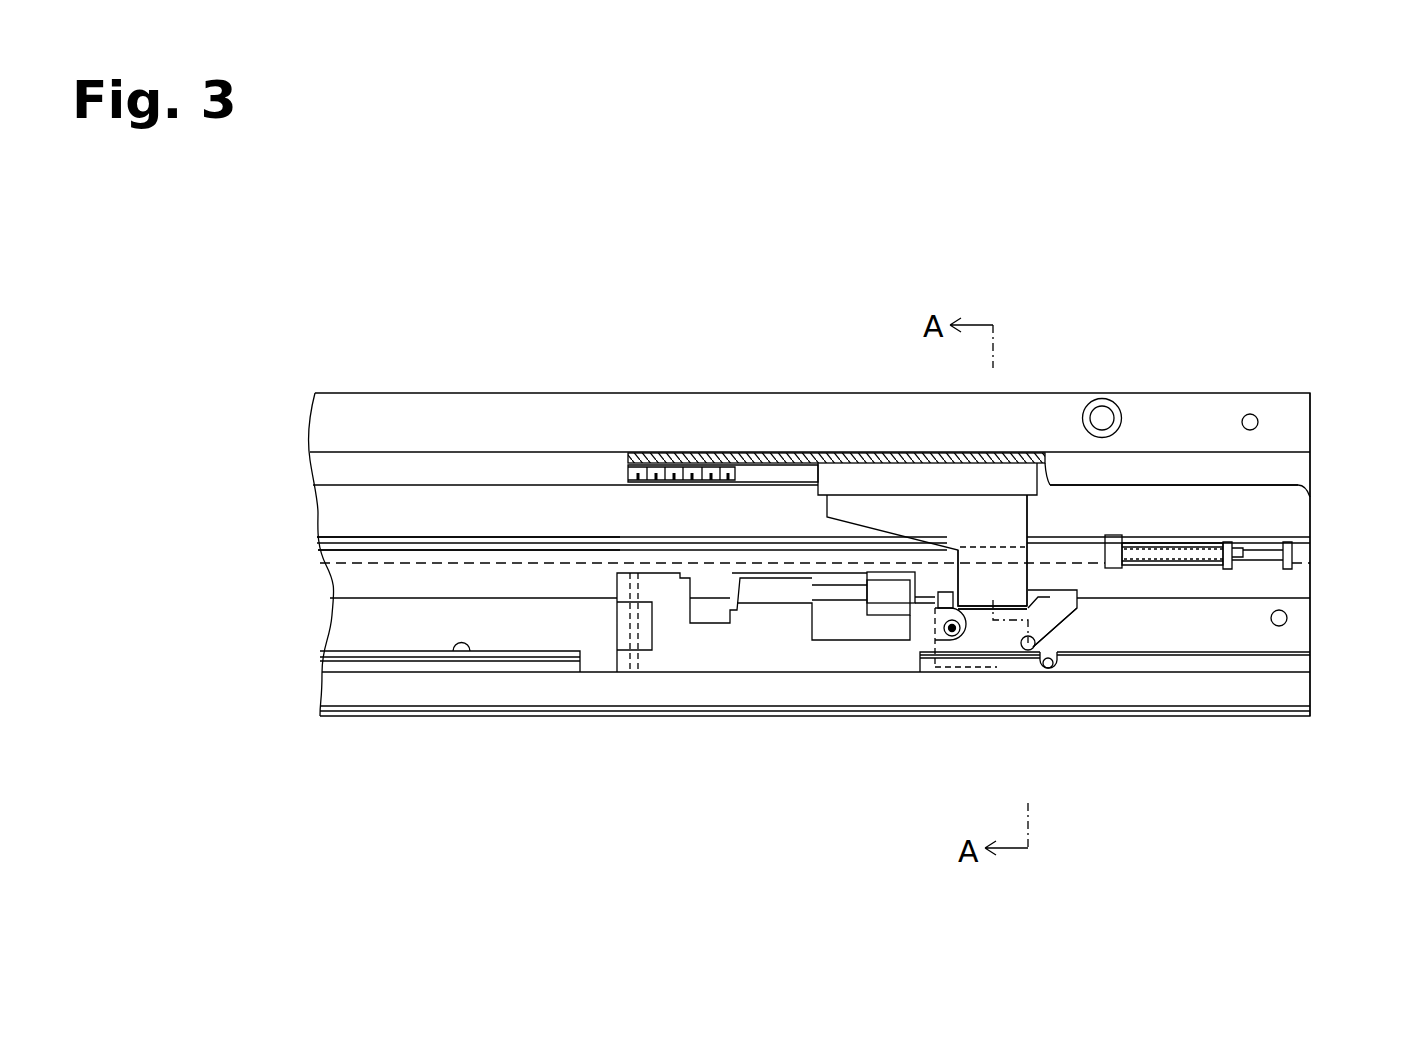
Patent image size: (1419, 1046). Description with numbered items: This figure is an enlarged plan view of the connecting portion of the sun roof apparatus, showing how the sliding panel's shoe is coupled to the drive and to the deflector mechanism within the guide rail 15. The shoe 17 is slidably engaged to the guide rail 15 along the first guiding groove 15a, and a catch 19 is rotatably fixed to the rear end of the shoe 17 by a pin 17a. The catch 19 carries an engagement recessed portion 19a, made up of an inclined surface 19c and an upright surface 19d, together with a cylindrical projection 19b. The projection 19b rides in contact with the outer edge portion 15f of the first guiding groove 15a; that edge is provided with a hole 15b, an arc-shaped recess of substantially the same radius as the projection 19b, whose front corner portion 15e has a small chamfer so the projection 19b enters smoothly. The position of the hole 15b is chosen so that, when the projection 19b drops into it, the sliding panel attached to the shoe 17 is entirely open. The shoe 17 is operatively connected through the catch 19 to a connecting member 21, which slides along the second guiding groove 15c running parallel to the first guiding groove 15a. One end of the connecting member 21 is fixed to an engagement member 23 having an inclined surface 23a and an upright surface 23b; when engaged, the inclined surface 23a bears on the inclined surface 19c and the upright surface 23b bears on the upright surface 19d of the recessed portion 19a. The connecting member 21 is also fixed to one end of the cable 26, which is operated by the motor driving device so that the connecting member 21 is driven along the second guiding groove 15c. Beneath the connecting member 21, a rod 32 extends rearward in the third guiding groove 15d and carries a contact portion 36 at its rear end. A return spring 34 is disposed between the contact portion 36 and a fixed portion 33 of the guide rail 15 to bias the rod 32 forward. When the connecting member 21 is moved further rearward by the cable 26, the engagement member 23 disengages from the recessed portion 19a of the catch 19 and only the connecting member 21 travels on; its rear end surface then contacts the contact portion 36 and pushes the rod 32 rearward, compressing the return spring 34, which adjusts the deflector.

The guide rail 15 is at (1312, 628).
The first guiding groove 15a is at (460, 652).
The hole 15b is at (1058, 656).
The second guiding groove 15c is at (1310, 488).
The third guiding groove 15d is at (383, 545).
The front corner portion 15e is at (1055, 668).
The outer edge portion 15f is at (1000, 652).
The shoe 17 is at (703, 662).
The pin 17a is at (950, 634).
The catch 19 is at (1050, 596).
The engagement recessed portion 19a is at (982, 605).
The cylindrical projection 19b is at (1026, 652).
The inclined surface 19c is at (1040, 600).
The upright surface 19d is at (966, 594).
The connecting member 21 is at (836, 462).
The engagement member 23 is at (1045, 480).
The inclined surface 23a is at (1046, 596).
The upright surface 23b is at (940, 592).
The cable 26 is at (678, 466).
The rod 32 is at (477, 553).
The fixed portion 33 is at (1232, 560).
The return spring 34 is at (1203, 563).
The contact portion 36 is at (1113, 536).